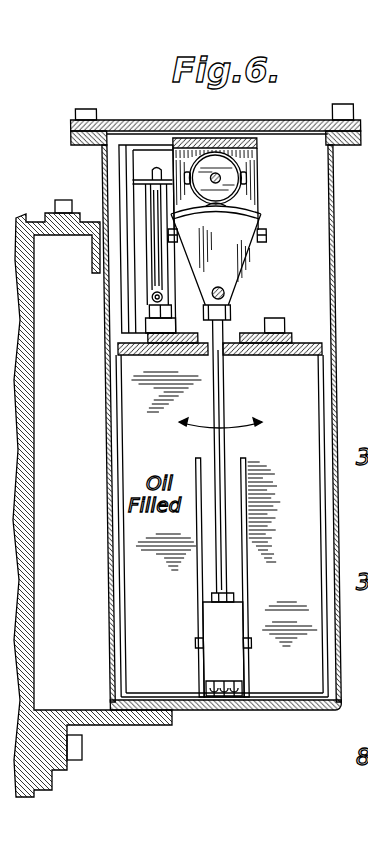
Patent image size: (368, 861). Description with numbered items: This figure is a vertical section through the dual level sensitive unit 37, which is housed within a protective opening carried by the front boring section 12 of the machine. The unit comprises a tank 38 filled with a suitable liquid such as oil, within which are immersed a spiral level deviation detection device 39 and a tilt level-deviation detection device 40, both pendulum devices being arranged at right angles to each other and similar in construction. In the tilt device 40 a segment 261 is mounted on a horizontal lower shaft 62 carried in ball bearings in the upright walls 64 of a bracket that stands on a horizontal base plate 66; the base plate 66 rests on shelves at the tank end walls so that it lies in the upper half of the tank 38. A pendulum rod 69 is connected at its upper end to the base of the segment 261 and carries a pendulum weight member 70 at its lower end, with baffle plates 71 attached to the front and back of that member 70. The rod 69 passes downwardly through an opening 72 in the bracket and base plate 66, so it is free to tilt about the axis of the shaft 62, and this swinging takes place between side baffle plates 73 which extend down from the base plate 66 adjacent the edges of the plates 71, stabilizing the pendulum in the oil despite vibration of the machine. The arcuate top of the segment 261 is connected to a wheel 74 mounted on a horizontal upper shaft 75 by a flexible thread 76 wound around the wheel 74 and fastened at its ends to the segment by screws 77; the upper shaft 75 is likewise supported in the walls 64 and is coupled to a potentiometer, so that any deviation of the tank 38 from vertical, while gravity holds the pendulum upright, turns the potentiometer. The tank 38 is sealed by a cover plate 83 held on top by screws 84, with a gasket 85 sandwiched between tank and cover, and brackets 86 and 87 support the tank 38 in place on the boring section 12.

The front boring section 12 is at (34, 562).
The dual level sensitive unit 37 is at (102, 415).
The tank 38 is at (108, 487).
The spiral level deviation detection device 39 is at (117, 172).
The tilt level-deviation detection device 40 is at (252, 263).
The horizontal lower shaft 62 is at (224, 293).
The upright walls 64 is at (183, 265).
The horizontal base plate 66 is at (302, 356).
The pendulum rod 69 is at (220, 383).
The pendulum weight member 70 is at (223, 663).
The baffle plates 71 is at (200, 587).
The opening 72 is at (210, 356).
The side baffle plates 73 is at (300, 517).
The wheel 74 is at (238, 162).
The horizontal upper shaft 75 is at (222, 177).
The flexible thread 76 is at (243, 208).
The screws 77 is at (176, 240).
The cover plate 83 is at (181, 122).
The screws 84 is at (87, 110).
The gasket 85 is at (71, 136).
The bracket 86 is at (37, 212).
The bracket 87 is at (125, 715).
The segment 261 is at (220, 268).